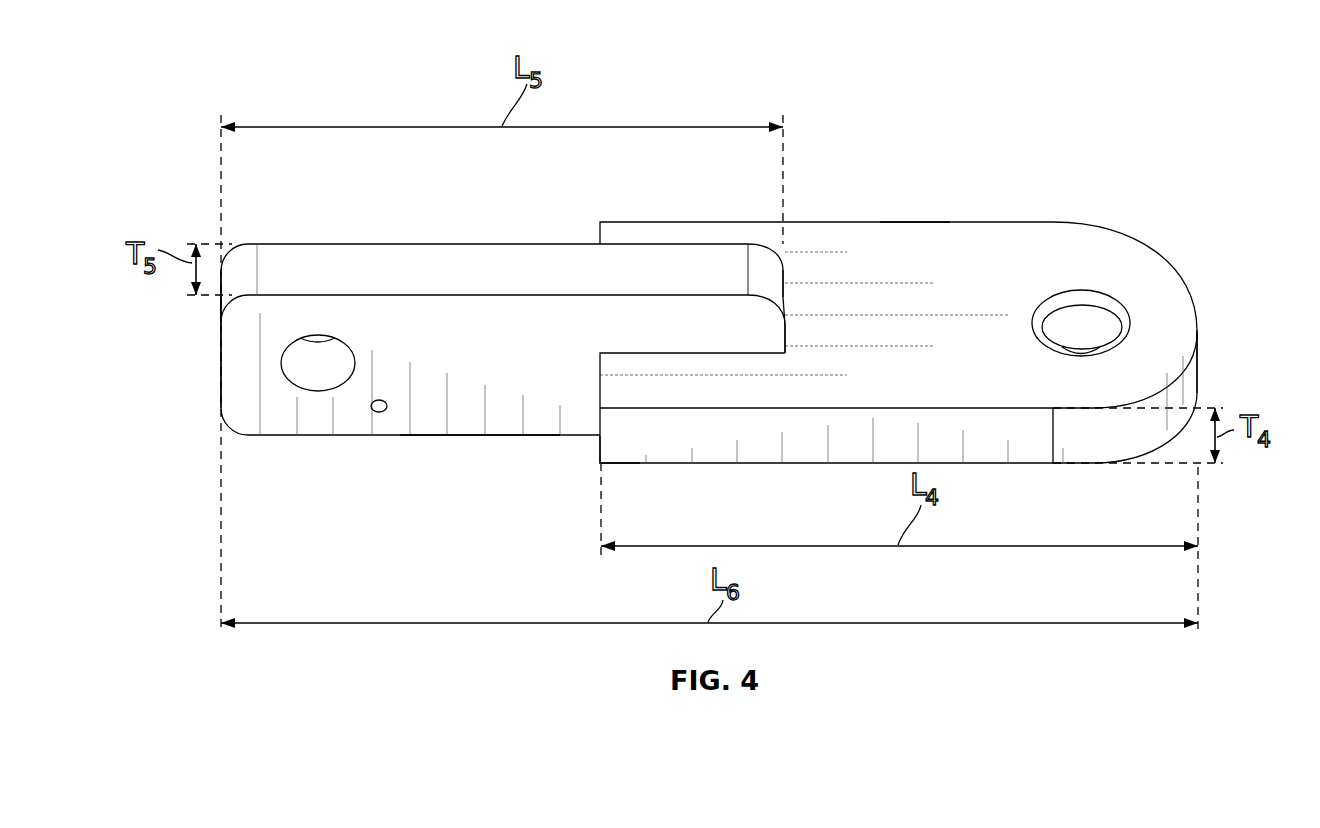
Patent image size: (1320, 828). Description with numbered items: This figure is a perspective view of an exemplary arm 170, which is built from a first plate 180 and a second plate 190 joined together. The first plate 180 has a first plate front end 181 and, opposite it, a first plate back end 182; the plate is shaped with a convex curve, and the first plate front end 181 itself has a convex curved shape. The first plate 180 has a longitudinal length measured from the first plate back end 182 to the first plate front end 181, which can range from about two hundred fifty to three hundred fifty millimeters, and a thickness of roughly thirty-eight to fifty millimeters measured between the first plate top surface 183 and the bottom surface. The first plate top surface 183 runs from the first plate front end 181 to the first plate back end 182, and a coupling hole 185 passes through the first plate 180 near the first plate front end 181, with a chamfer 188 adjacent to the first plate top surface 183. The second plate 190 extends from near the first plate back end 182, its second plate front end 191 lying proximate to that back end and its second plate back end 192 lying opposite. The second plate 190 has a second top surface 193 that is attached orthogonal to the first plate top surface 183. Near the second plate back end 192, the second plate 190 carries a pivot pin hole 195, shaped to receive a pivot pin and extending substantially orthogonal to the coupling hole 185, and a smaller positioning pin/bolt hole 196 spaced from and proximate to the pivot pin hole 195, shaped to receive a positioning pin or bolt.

The arm 170 is at (929, 84).
The first plate 180 is at (970, 290).
The first plate front end 181 is at (1198, 348).
The first plate back end 182 is at (600, 450).
The first plate top surface 183 is at (913, 282).
The coupling hole 185 is at (1091, 338).
The chamfer 188 is at (1093, 297).
The second plate 190 is at (507, 258).
The second plate front end 191 is at (783, 297).
The second plate back end 192 is at (220, 352).
The second top surface 193 is at (465, 420).
The pivot pin hole 195 is at (315, 358).
The positioning pin/bolt hole 196 is at (380, 398).